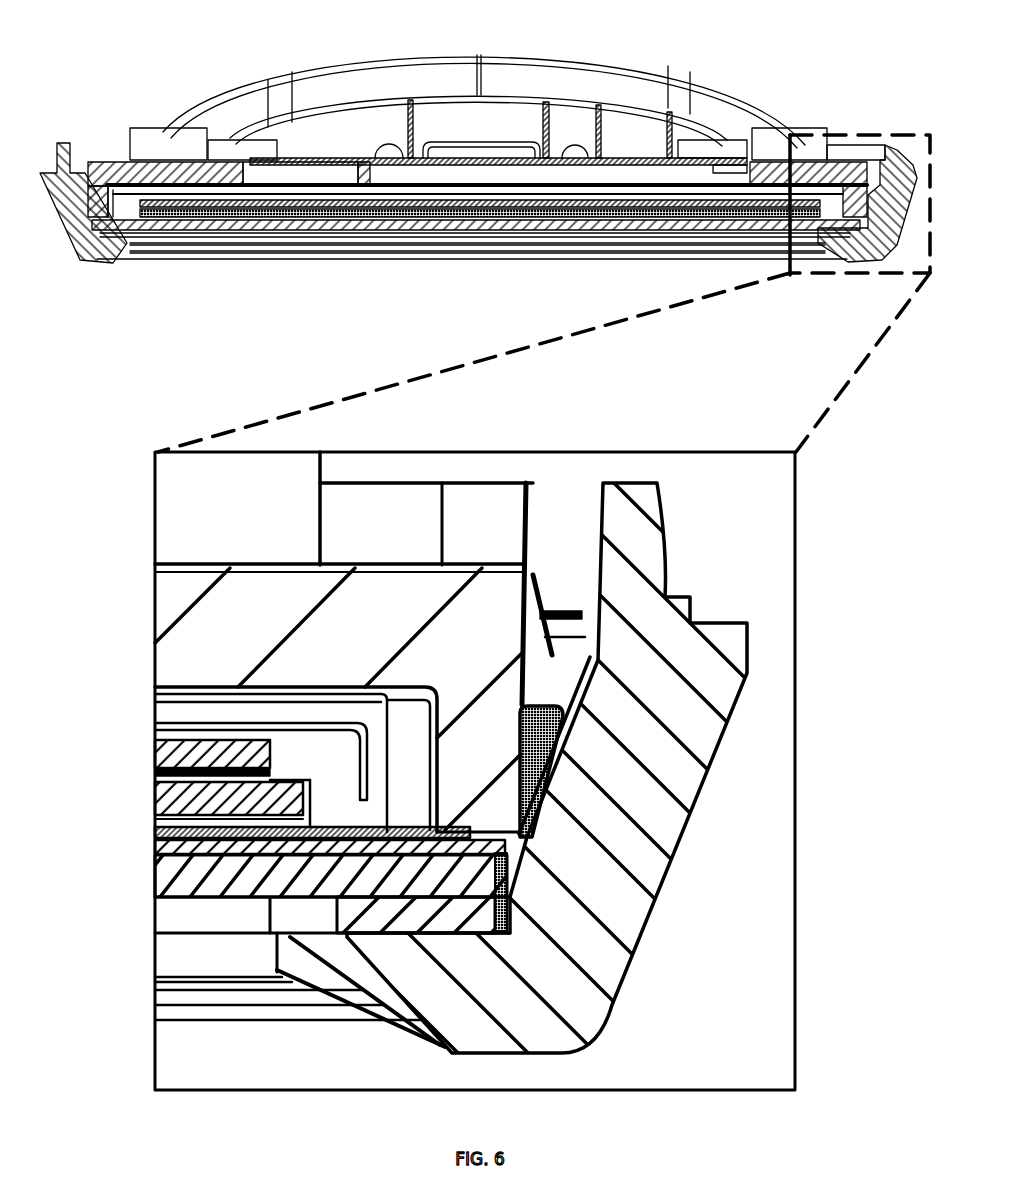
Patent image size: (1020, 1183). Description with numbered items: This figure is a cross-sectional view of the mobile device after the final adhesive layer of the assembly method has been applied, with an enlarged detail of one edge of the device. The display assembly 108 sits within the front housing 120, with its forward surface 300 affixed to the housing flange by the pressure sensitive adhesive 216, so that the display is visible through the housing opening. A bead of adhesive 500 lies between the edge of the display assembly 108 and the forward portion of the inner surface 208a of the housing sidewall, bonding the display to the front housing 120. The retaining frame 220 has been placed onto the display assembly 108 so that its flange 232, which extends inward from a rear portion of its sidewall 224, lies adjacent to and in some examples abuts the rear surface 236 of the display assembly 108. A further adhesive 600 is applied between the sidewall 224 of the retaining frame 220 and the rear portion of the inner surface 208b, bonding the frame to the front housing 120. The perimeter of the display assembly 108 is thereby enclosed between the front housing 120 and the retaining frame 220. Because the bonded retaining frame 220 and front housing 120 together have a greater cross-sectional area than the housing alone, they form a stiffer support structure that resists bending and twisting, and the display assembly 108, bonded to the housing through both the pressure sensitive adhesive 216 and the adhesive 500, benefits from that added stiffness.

The display assembly 108 is at (272, 248).
The front housing 120 is at (885, 137).
The pressure sensitive adhesive 216 is at (384, 928).
The retaining frame 220 is at (444, 434).
The sidewall 224 is at (478, 625).
The flange 232 is at (150, 178).
The rear surface 236 is at (470, 185).
The forward surface 300 is at (360, 250).
The adhesive 500 is at (514, 893).
The adhesive 600 is at (540, 770).
The forward portion of the inner surface 208a is at (514, 856).
The rear portion of the inner surface 208b is at (590, 702).